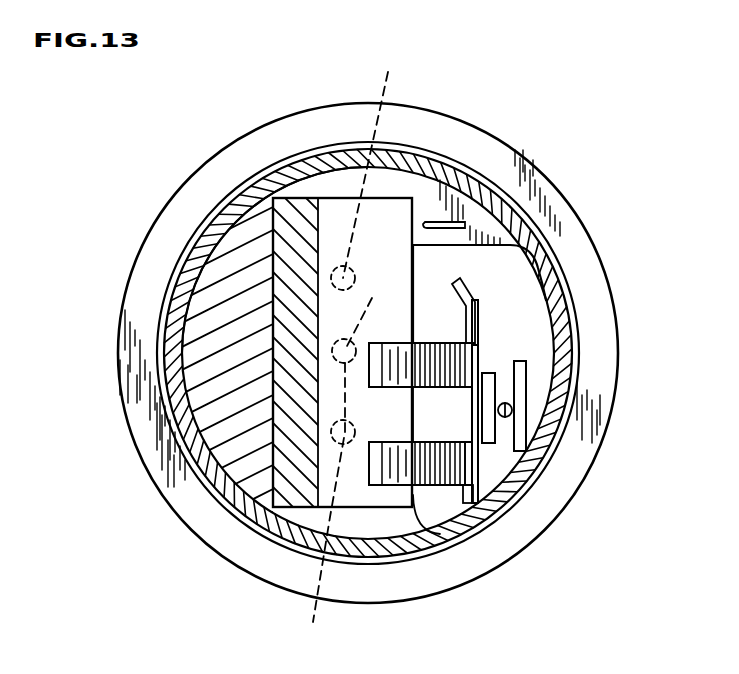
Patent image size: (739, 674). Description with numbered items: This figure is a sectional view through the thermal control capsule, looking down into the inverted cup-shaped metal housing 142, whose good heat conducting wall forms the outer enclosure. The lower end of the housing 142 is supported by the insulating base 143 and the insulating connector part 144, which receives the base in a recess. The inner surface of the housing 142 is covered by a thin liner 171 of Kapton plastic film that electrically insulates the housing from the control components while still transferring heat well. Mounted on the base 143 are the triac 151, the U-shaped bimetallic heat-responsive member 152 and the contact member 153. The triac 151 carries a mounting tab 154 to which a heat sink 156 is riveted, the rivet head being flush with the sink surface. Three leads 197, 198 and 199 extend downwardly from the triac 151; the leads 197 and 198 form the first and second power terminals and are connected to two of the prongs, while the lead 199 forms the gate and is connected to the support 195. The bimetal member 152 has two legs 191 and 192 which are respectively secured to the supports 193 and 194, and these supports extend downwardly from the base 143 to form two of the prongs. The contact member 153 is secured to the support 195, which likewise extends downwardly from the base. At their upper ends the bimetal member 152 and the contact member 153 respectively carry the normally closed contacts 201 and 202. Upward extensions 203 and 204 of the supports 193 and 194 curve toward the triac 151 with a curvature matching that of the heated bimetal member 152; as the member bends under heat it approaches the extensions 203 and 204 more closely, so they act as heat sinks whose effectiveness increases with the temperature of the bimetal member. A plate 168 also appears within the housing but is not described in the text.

The housing 142 is at (162, 392).
The base 143 is at (505, 236).
The connector part 144 is at (182, 513).
The triac 151 is at (341, 212).
The bimetallic heat-responsive member 152 is at (478, 357).
The contact member 153 is at (525, 385).
The mounting tab 154 is at (291, 289).
The heat sink 156 is at (205, 355).
The plate 168 is at (456, 221).
The liner 171 is at (176, 318).
The leg 191 is at (478, 372).
The leg 192 is at (478, 470).
The support 193 is at (478, 333).
The support 194 is at (468, 455).
The support 195 is at (512, 412).
The lead 197 is at (319, 506).
The lead 198 is at (366, 325).
The lead 199 is at (373, 173).
The contact 201 is at (483, 447).
The contact 202 is at (496, 441).
The extension 203 is at (438, 343).
The extension 204 is at (421, 474).